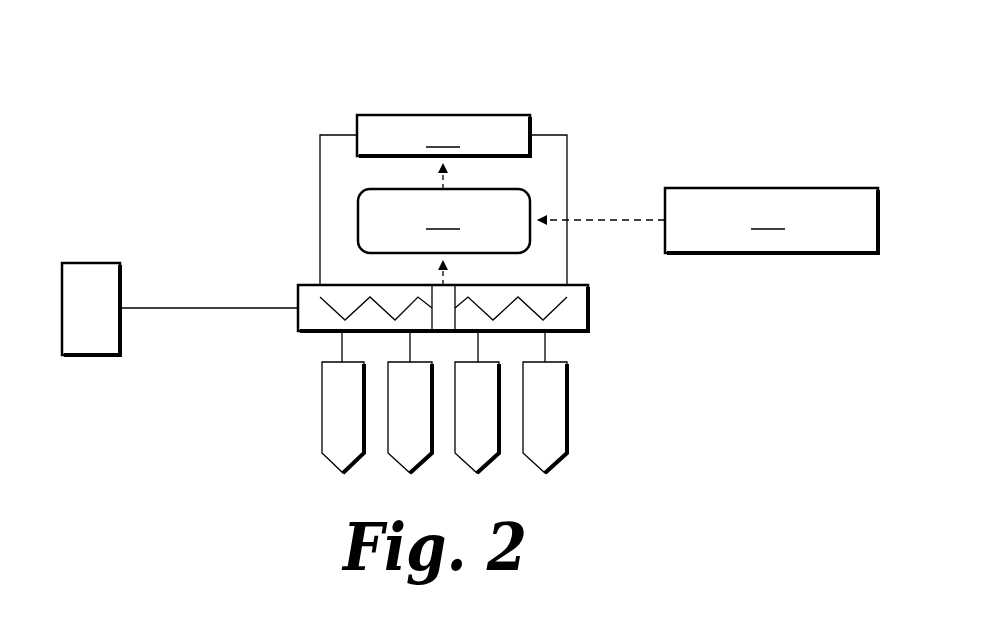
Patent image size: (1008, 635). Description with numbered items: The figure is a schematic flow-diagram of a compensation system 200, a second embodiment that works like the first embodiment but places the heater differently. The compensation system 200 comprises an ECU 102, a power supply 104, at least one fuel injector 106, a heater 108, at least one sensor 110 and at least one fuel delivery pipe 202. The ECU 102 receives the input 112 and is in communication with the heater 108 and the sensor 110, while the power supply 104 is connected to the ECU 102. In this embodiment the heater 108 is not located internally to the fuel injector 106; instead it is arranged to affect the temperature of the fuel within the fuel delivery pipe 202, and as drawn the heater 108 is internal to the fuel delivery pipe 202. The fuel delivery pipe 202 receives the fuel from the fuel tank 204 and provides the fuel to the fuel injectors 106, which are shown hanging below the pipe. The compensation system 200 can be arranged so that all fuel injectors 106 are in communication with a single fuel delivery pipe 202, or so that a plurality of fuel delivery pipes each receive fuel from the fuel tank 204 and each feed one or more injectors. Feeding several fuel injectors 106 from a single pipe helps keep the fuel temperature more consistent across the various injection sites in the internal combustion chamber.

The compensation system 200 is at (684, 90).
The ECU 102 is at (444, 221).
The power supply 104 is at (443, 135).
The fuel injector 106 is at (322, 398).
The heater 108 is at (560, 316).
The sensor 110 is at (445, 325).
The input 112 is at (771, 220).
The fuel delivery pipe 202 is at (292, 282).
The fuel tank 204 is at (100, 263).